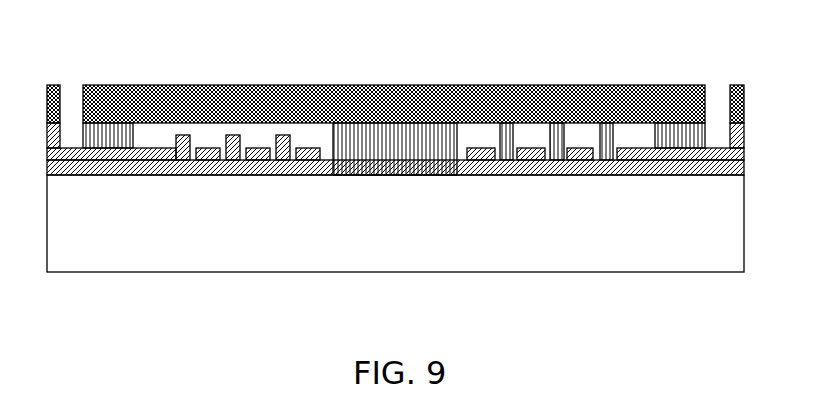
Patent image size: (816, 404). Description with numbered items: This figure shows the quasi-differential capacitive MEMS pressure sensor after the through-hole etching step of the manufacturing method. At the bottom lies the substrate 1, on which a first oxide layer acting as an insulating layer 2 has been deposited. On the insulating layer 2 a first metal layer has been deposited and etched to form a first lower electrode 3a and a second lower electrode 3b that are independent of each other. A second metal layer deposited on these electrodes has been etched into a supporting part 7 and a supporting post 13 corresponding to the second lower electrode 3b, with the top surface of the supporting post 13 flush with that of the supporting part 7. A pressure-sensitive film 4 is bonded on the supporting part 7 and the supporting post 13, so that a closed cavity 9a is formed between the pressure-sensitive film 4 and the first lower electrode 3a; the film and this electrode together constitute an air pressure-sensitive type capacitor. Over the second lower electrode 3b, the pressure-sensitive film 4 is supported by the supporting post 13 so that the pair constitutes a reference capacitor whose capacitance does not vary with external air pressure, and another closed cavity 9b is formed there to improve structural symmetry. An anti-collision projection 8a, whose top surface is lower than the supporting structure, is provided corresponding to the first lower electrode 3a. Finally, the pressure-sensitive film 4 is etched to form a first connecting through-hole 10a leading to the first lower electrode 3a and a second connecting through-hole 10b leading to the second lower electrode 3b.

The substrate 1 is at (346, 246).
The insulating layer 2 is at (226, 176).
The first lower electrode 3a is at (159, 161).
The second lower electrode 3b is at (553, 161).
The pressure-sensitive film 4 is at (187, 85).
The supporting part 7 is at (127, 176).
The anti-collision projection 8a is at (296, 161).
The closed cavity 9a is at (272, 85).
The closed cavity 9b is at (535, 85).
The first connecting through-hole 10a is at (67, 103).
The second connecting through-hole 10b is at (712, 100).
The supporting post 13 is at (517, 161).